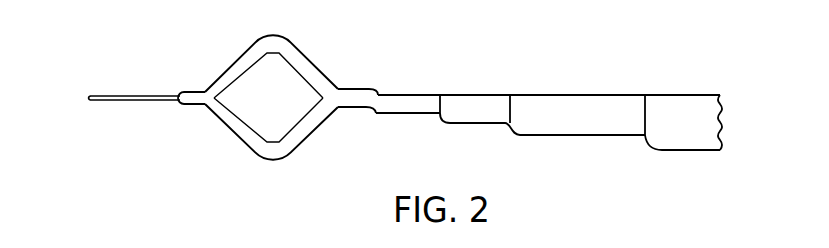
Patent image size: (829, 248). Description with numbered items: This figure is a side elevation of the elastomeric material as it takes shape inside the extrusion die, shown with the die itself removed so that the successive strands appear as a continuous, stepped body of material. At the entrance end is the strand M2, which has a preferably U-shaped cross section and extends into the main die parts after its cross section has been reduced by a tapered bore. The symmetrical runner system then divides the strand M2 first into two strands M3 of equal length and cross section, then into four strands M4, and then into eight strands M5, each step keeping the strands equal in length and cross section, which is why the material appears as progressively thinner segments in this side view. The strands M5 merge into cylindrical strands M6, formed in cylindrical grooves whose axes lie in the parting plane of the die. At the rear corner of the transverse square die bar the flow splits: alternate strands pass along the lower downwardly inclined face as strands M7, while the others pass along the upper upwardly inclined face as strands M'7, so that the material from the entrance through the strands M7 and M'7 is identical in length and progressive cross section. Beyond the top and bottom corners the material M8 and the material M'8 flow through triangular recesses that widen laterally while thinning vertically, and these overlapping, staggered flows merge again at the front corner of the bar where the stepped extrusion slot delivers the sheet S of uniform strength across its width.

The sheet S is at (120, 101).
The material in the overlapping recesses R'8 M'8 is at (229, 61).
The strands formed in grooves R'7 M'7 is at (318, 62).
The material in the recesses R8 M8 is at (236, 138).
The strands formed in grooves R7 M7 is at (303, 140).
The cylindrical strands M6 is at (356, 109).
The strands M5 is at (410, 114).
The strands M4 is at (485, 124).
The strands M3 is at (592, 136).
The strand M2 is at (693, 151).